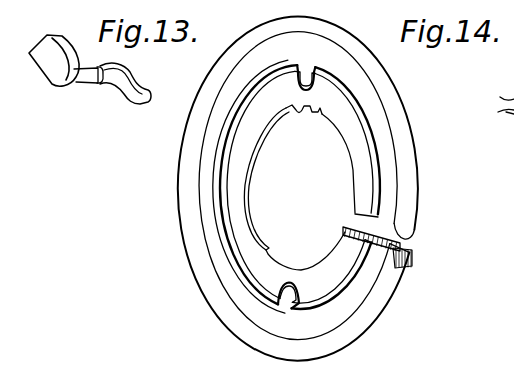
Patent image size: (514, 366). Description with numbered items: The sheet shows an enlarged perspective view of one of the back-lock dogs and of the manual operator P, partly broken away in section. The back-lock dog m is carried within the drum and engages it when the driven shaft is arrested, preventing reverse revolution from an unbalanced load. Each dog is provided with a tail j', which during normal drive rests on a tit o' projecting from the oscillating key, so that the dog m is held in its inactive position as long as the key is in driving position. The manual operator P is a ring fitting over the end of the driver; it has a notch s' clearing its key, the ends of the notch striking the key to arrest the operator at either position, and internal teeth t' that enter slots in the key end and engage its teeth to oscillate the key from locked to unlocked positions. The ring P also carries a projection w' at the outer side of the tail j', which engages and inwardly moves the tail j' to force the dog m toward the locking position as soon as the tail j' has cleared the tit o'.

In FIG. 13, the back-lock dog m is at (38, 70).
In FIG. 13, the tail j' is at (112, 97).
In FIG. 13, the manual operator P is at (418, 196).
In FIG. 13, the projection w' is at (296, 177).
In FIG. 13, the notch s' is at (299, 188).
In FIG. 13, the internal teeth t' is at (304, 127).
In FIG. 14, the tit o' is at (500, 101).
In FIG. 14, the piece k is at (507, 126).